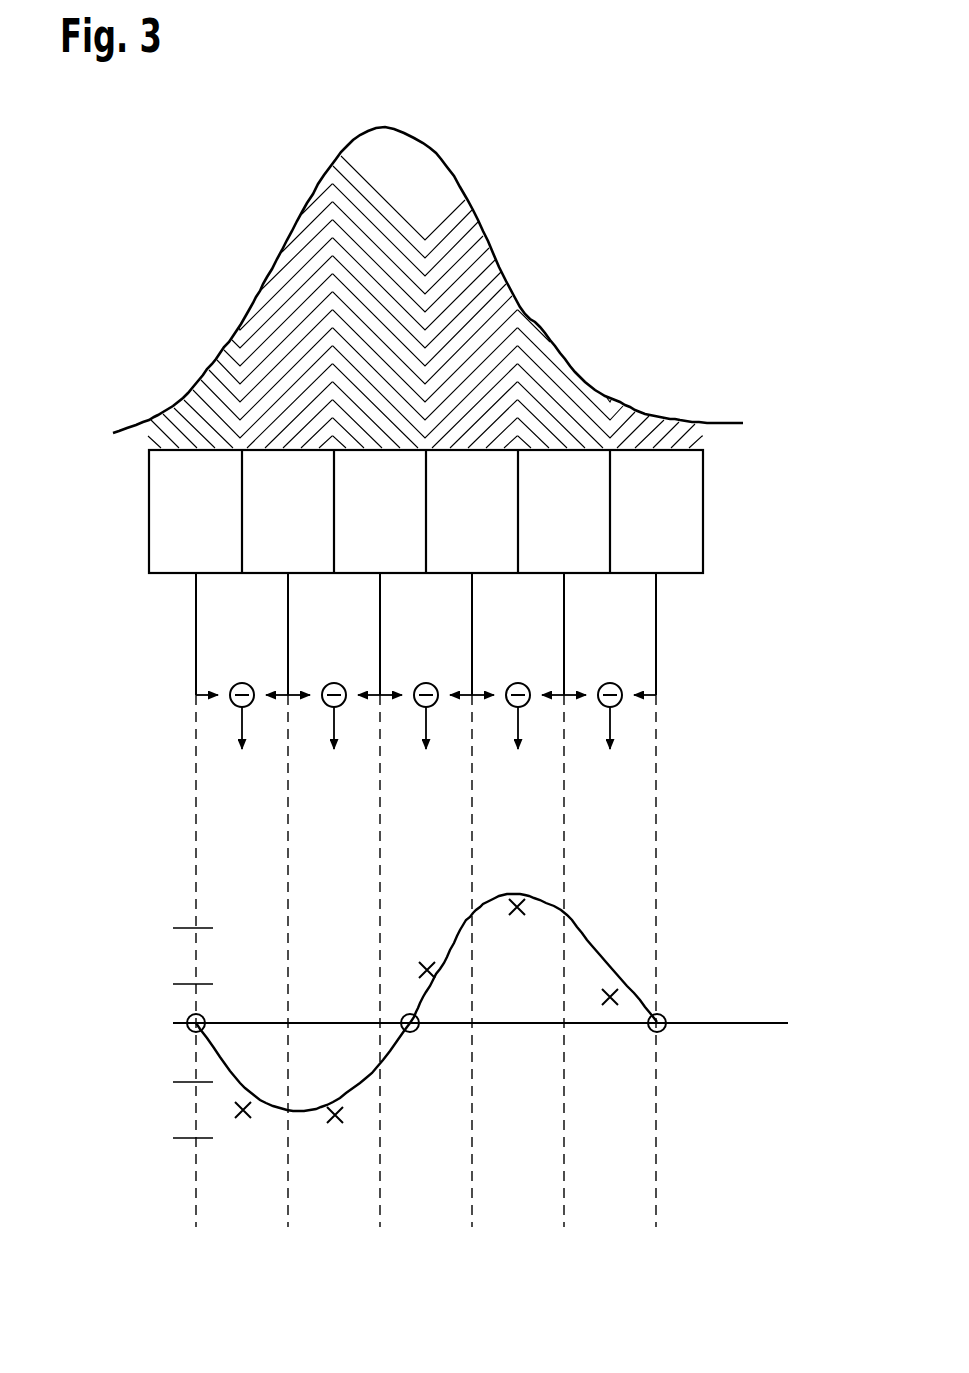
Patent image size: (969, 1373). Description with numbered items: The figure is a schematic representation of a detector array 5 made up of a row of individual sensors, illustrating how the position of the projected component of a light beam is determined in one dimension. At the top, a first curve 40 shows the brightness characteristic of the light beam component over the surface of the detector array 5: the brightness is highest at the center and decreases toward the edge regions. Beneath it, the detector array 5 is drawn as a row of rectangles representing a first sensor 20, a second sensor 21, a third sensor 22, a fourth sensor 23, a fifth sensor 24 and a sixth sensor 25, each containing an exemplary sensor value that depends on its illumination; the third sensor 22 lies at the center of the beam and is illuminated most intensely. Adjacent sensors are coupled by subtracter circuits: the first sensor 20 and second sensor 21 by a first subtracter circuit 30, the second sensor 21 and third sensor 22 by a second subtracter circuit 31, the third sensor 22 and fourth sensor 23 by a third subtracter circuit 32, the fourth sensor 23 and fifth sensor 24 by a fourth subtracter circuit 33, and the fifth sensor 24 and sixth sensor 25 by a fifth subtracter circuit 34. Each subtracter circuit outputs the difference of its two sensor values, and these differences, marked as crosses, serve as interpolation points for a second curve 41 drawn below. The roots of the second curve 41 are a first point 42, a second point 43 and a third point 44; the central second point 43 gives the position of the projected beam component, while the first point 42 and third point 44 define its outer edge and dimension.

The first curve 40 is at (264, 191).
The detector array 5 is at (115, 511).
The first sensor 20 is at (167, 575).
The second sensor 21 is at (259, 575).
The third sensor 22 is at (350, 575).
The fourth sensor 23 is at (443, 575).
The fifth sensor 24 is at (534, 575).
The sixth sensor 25 is at (627, 575).
The first subtracter circuit 30 is at (234, 707).
The second subtracter circuit 31 is at (327, 707).
The third subtracter circuit 32 is at (417, 707).
The fourth subtracter circuit 33 is at (527, 703).
The fifth subtracter circuit 34 is at (619, 706).
The second curve 41 is at (115, 1000).
The first point 42 is at (186, 1032).
The second point 43 is at (414, 1032).
The third point 44 is at (665, 1030).